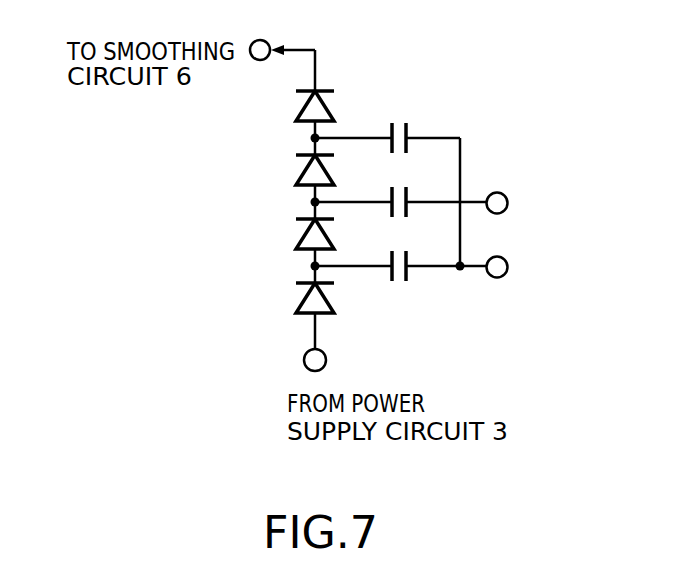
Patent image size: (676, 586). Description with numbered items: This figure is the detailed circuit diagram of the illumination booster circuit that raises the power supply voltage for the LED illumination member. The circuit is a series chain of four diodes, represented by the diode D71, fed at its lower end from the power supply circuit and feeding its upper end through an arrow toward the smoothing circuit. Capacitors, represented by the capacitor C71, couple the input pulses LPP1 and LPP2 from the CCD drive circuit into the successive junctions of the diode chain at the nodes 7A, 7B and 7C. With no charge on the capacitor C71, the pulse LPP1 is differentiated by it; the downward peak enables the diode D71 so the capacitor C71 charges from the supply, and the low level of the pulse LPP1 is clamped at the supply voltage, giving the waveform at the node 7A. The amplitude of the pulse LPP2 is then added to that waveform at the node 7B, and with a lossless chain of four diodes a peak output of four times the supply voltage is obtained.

The node 7A is at (313, 266).
The node 7B is at (313, 202).
The node 7C is at (313, 138).
The diode D71 is at (298, 311).
The capacitor C71 is at (401, 288).
The pulse LPP1 is at (526, 269).
The pulse LPP2 is at (528, 205).